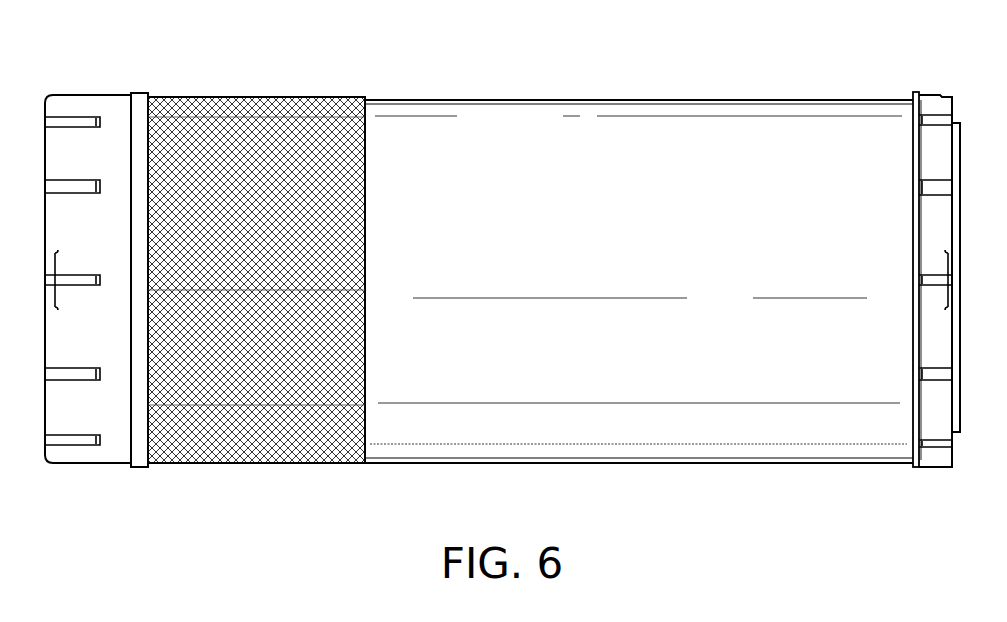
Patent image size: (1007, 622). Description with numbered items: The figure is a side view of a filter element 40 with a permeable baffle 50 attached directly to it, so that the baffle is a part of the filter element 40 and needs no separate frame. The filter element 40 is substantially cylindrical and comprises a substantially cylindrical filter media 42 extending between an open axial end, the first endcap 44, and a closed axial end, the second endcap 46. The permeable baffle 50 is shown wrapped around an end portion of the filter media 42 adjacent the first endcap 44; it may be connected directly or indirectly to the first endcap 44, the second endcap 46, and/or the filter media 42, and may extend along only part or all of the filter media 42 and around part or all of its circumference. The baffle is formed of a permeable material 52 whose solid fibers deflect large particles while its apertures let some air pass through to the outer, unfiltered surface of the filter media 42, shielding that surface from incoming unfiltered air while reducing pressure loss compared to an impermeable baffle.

The filter element 40 is at (793, 100).
The filter media 42 is at (735, 138).
The first endcap 44 is at (110, 465).
The second endcap 46 is at (927, 468).
The permeable baffle 50 is at (265, 95).
The permeable material 52 is at (188, 128).